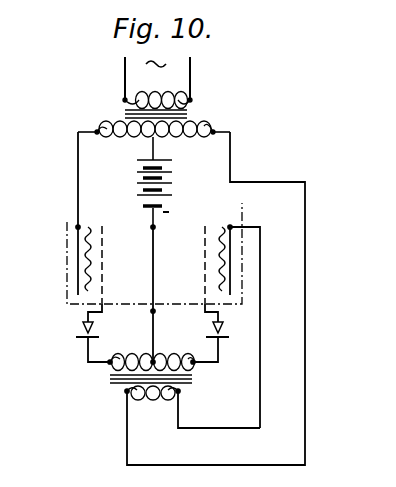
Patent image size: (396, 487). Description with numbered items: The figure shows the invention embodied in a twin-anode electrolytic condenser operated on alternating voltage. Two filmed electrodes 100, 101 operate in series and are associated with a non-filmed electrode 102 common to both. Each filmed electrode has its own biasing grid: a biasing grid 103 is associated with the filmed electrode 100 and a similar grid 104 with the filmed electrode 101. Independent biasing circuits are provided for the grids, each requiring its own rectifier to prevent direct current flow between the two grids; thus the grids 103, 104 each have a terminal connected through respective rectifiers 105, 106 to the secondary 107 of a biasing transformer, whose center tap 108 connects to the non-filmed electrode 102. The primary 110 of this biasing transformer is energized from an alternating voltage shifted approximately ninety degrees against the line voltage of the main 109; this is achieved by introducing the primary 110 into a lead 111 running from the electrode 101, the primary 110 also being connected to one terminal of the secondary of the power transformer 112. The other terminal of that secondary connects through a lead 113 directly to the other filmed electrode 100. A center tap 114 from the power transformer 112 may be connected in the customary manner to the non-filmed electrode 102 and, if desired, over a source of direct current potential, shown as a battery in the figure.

The main 109 is at (160, 77).
The power transformer 112 is at (192, 115).
The center tap 114 is at (153, 140).
The lead 113 is at (78, 180).
The filmed electrode 100 is at (88, 262).
The biasing grid 103 is at (104, 243).
The grid 104 is at (206, 245).
The non-filmed electrode 102 is at (153, 268).
The filmed electrode 101 is at (222, 266).
The rectifier 105 is at (80, 330).
The rectifier 106 is at (219, 340).
The secondary 107 is at (130, 354).
The center tap 108 is at (153, 360).
The primary 110 is at (151, 400).
The lead 111 is at (260, 408).